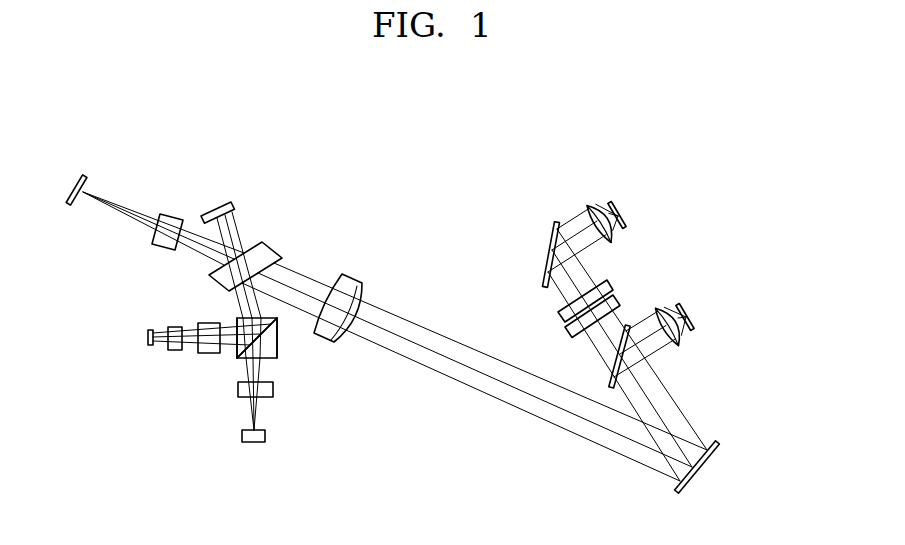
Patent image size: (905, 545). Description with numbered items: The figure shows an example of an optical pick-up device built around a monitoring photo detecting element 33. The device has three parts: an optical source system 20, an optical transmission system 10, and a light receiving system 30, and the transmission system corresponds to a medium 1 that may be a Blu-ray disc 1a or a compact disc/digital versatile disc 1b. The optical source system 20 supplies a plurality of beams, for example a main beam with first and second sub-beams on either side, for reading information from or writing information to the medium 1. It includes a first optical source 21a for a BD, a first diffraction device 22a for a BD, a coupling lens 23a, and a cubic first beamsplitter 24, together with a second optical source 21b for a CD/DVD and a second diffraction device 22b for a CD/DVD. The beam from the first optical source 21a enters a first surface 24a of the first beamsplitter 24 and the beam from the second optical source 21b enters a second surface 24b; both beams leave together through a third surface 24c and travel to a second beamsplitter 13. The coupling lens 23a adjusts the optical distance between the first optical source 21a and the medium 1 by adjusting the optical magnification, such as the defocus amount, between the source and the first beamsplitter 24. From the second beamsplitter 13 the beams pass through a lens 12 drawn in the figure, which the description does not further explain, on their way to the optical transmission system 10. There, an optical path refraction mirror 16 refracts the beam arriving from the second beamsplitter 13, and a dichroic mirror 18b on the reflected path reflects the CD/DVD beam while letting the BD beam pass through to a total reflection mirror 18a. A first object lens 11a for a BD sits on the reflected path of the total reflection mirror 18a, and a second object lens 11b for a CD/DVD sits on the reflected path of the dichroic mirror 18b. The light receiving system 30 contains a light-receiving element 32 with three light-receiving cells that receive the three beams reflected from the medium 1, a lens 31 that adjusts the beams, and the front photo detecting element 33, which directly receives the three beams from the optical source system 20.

The medium 1 is at (706, 187).
The medium 1a is at (616, 212).
The medium 1b is at (674, 308).
The optical transmission system 10 is at (603, 156).
The first object lens 11a is at (588, 207).
The second object lens 11b is at (655, 310).
The collimating lens 12 is at (348, 280).
The second beamsplitter 13 is at (265, 250).
The optical path refraction mirror 16 is at (718, 442).
The total reflection mirror 18a is at (549, 251).
The dichroic mirror 18b is at (612, 367).
The optical source system 20 is at (284, 471).
The first optical source 21a is at (148, 343).
The second optical source 21b is at (267, 436).
The first diffraction device 22a is at (172, 352).
The second diffraction device 22b is at (272, 393).
The coupling lens 23a is at (208, 355).
The first beamsplitter 24 is at (239, 365).
The first surface 24a is at (238, 323).
The second surface 24b is at (271, 359).
The third surface 24c is at (271, 316).
The light receiving system 30 is at (168, 136).
The lens 31 is at (171, 214).
The light-receiving element 32 is at (83, 175).
The photo detecting element 33 is at (221, 207).